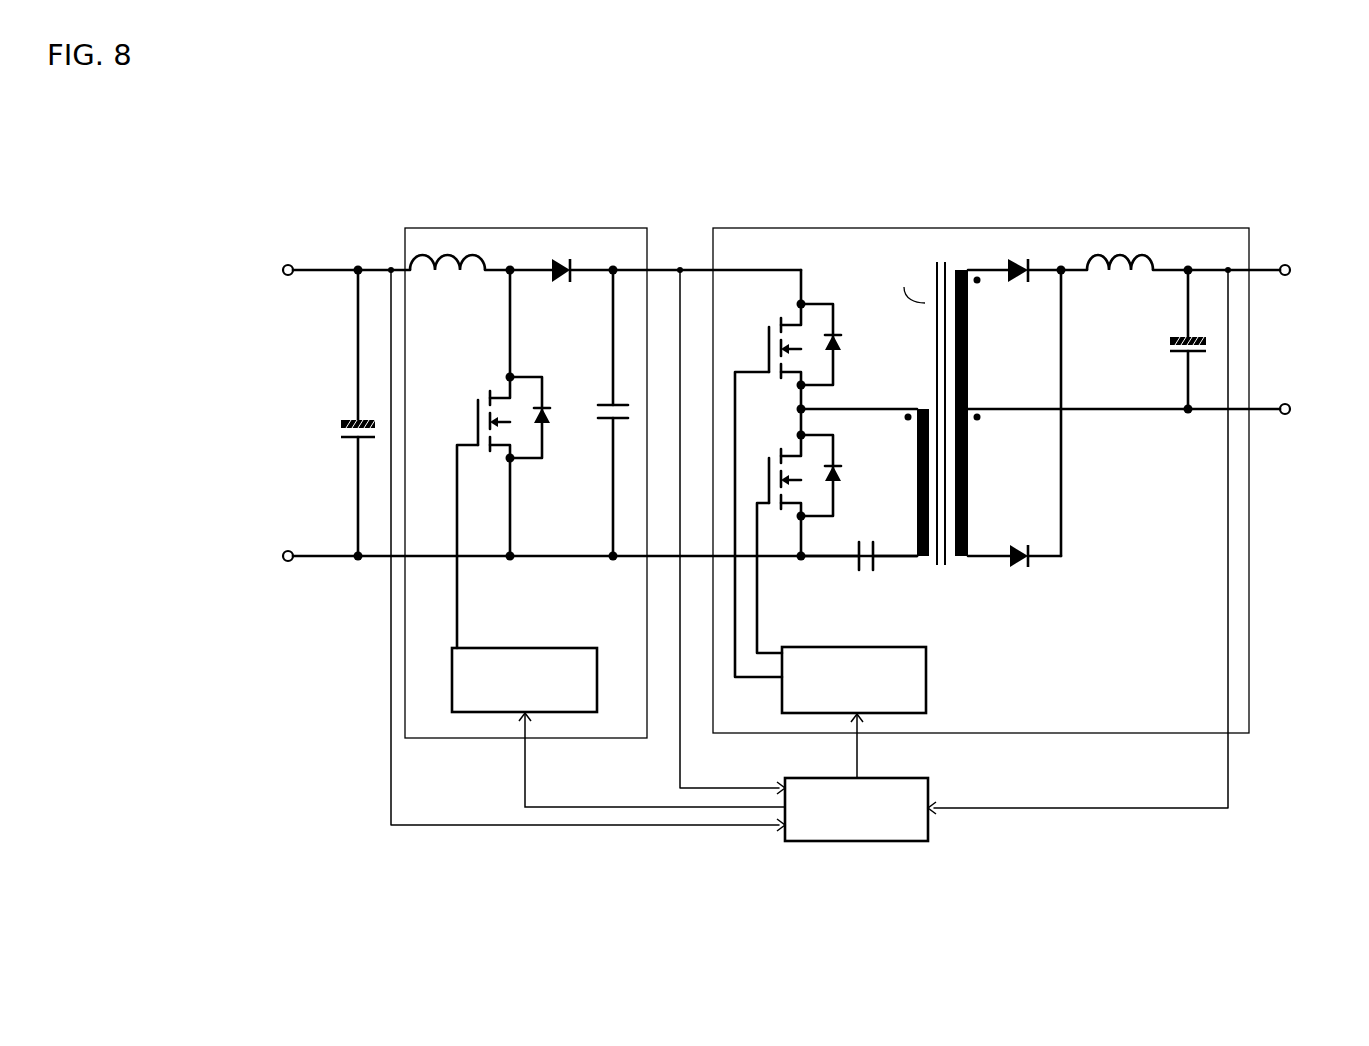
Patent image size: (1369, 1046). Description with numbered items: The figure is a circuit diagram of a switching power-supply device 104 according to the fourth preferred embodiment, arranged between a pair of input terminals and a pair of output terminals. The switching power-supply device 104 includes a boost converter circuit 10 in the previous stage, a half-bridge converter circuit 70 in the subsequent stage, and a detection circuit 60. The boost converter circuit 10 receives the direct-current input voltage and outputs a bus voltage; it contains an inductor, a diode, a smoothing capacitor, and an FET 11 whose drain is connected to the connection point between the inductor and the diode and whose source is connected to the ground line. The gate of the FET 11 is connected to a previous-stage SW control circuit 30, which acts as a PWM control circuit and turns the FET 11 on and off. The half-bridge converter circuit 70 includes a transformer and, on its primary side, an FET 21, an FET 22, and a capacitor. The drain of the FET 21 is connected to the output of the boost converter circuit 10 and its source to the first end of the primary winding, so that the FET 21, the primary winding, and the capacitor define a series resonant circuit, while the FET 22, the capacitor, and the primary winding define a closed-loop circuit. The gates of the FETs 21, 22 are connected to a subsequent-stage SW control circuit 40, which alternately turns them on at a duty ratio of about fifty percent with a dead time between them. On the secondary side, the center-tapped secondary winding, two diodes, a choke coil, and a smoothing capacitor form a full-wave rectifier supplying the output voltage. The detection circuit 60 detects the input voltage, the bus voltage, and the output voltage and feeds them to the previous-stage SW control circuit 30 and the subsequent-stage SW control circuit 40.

The switching power-supply device 104 is at (336, 191).
The boost converter circuit 10 is at (405, 228).
The half-bridge converter circuit 70 is at (713, 228).
The FET 11 is at (503, 507).
The FET 21 is at (788, 486).
The FET 22 is at (798, 538).
The previous-stage SW control circuit 30 is at (597, 658).
The subsequent-stage SW control circuit 40 is at (926, 658).
The detection circuit 60 is at (928, 781).